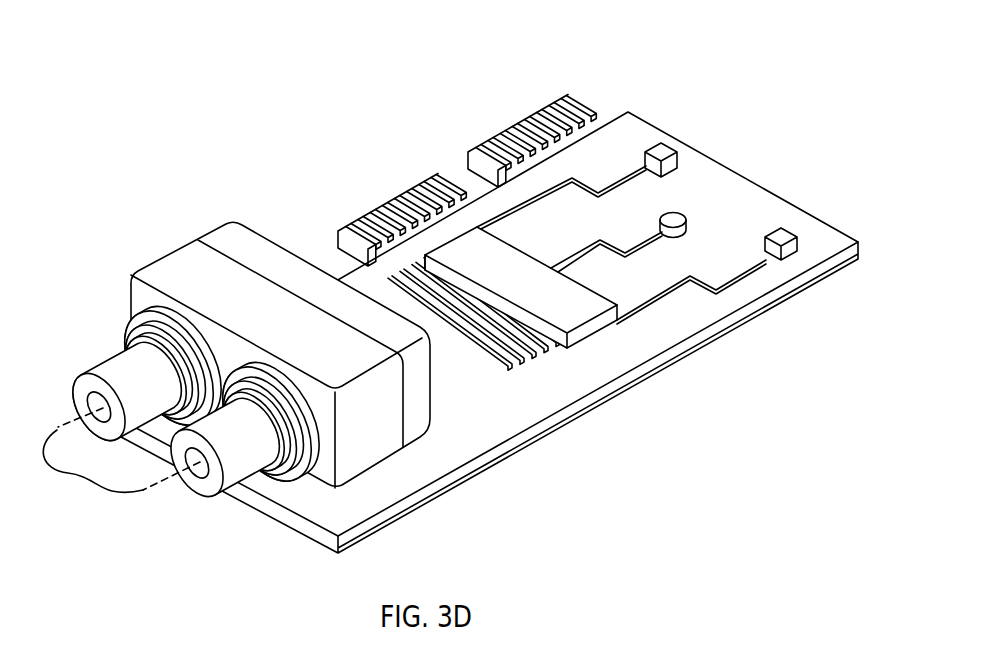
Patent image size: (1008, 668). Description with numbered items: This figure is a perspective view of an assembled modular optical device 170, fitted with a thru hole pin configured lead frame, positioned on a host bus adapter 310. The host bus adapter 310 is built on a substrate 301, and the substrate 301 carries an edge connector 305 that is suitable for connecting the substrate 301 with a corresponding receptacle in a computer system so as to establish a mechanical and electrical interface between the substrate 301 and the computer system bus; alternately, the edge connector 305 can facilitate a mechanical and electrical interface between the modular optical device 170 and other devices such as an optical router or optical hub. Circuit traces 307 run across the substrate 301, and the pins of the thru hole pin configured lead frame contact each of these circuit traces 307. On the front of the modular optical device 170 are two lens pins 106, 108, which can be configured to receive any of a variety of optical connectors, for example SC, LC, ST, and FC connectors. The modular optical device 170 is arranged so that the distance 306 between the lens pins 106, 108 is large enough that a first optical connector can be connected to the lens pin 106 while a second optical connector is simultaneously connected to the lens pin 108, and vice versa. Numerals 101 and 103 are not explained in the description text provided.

The optical module housing 101 is at (230, 236).
The module body 103 is at (182, 258).
The lens pin 106 is at (237, 459).
The lens pin 108 is at (112, 371).
The modular optical device 170 is at (107, 249).
The substrate 301 is at (716, 333).
The edge connector 305 is at (420, 180).
The distance 306 is at (114, 470).
The circuit traces 307 is at (462, 428).
The host bus adapter 310 is at (784, 103).